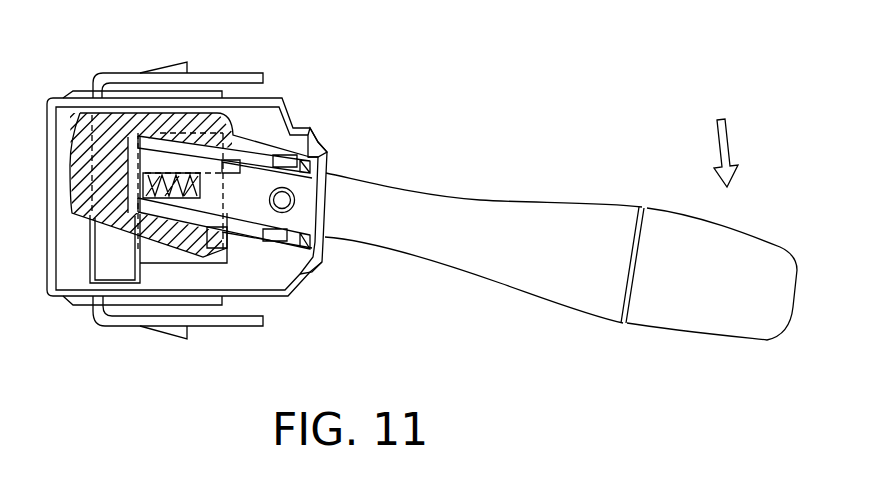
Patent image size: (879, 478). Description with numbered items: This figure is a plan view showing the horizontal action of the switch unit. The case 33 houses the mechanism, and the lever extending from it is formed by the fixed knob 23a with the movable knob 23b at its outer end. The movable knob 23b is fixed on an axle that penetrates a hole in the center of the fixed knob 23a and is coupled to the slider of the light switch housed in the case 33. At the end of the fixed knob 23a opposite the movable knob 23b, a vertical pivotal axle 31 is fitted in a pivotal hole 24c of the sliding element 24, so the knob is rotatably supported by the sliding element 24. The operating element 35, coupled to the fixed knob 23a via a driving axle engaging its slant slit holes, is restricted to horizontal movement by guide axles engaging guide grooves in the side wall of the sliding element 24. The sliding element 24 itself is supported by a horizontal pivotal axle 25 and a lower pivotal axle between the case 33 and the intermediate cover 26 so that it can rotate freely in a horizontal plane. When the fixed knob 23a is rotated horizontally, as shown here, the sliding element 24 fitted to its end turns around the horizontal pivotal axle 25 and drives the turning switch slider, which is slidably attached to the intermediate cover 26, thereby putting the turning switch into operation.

The sliding element 24 is at (80, 140).
The pivotal hole 24c is at (312, 142).
The horizontal pivotal axle 25 is at (294, 200).
The intermediate cover 26 is at (265, 283).
The vertical pivotal axle 31 is at (300, 254).
The case 33 is at (278, 97).
The operating element 35 is at (190, 217).
The fixed knob 23a is at (518, 197).
The movable knob 23b is at (716, 328).